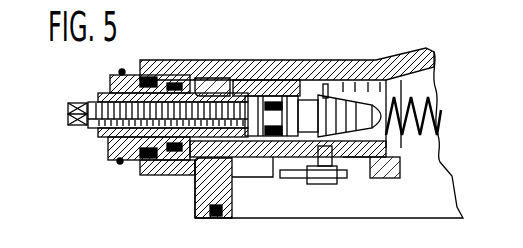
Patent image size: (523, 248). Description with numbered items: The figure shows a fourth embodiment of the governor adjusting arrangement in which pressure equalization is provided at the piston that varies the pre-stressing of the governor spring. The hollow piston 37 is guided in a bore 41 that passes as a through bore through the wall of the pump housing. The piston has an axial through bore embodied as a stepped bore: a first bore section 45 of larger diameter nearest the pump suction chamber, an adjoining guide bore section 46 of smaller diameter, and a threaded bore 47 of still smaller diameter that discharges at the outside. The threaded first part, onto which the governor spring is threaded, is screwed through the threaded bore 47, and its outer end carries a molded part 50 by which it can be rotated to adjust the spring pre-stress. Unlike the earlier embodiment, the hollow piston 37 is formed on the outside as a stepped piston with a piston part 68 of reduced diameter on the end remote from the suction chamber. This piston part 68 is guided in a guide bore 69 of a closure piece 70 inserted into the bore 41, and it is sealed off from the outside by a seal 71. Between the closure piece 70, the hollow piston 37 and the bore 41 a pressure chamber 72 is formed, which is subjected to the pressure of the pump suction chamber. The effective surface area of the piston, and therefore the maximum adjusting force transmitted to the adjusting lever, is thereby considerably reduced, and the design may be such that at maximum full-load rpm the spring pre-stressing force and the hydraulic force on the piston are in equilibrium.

The hollow piston 37 is at (248, 97).
The bore 41 is at (213, 80).
The first bore section 45 is at (393, 151).
The guide bore section 46 is at (246, 82).
The threaded bore 47 is at (197, 183).
The molded part 50 is at (68, 106).
The piston part 68 is at (195, 97).
The guide bore 69 is at (113, 143).
The closure piece 70 is at (119, 71).
The seal 71 is at (163, 177).
The pressure chamber 72 is at (220, 150).